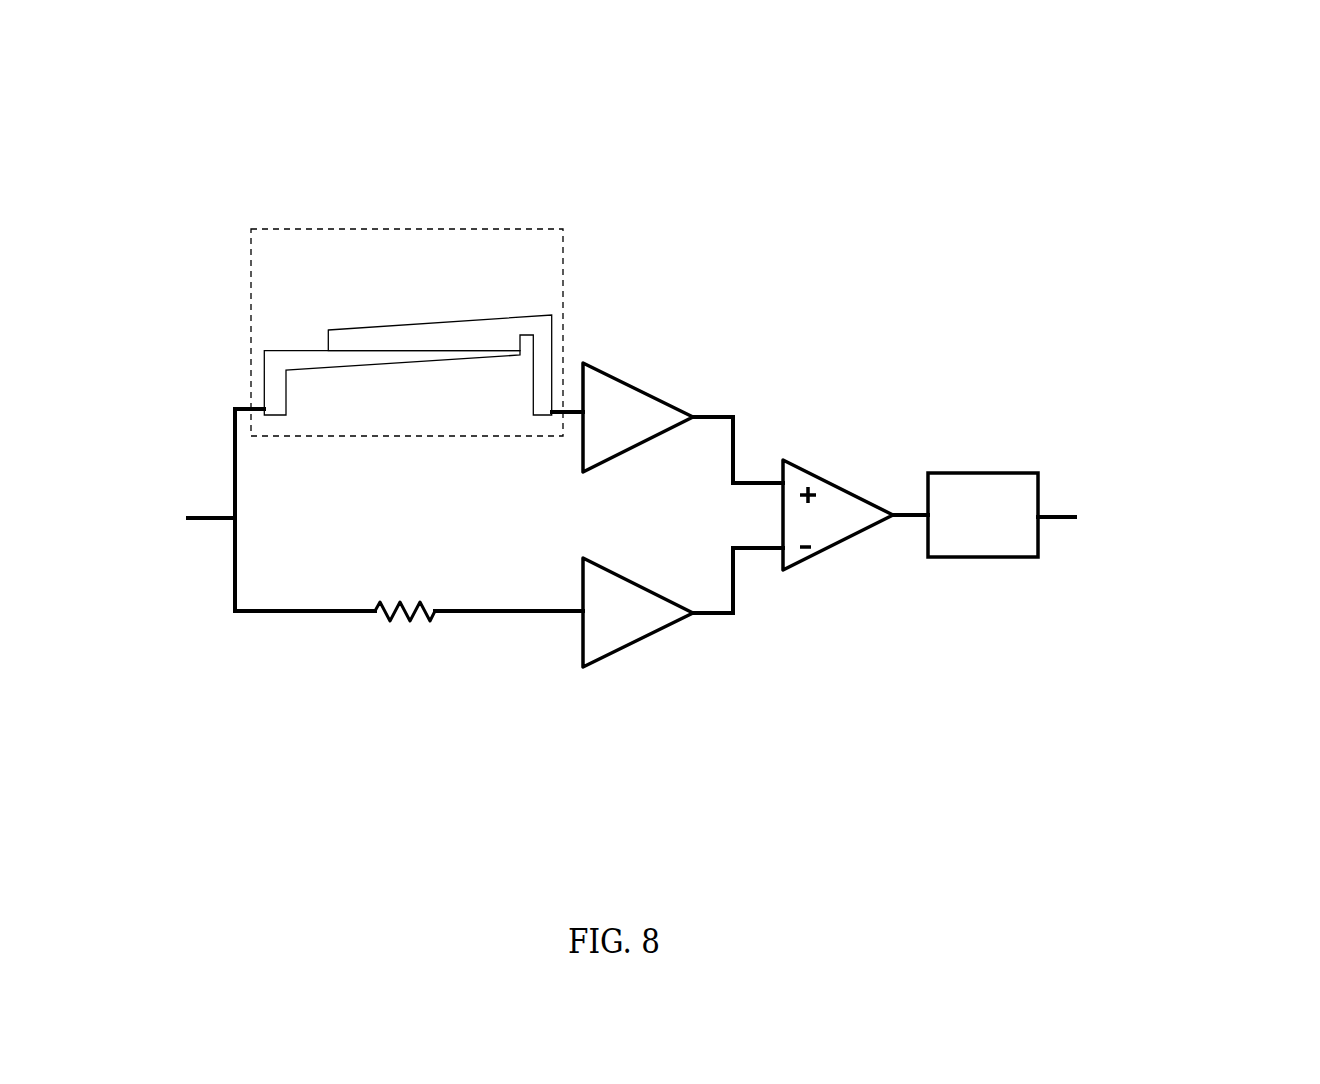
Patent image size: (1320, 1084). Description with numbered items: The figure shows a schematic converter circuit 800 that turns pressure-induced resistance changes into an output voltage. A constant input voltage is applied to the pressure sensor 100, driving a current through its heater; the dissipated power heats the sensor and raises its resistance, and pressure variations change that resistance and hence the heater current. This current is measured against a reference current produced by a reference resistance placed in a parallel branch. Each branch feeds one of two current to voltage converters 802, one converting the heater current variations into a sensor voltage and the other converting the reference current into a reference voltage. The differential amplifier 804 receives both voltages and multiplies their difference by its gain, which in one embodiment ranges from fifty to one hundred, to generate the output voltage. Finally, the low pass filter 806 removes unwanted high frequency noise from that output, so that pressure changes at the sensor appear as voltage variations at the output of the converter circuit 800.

The pressure sensor 100 is at (410, 229).
The converter circuit 800 is at (1207, 160).
The current to voltage converter 802 is at (637, 388).
The differential amplifier 804 is at (830, 483).
The low pass filter 806 is at (987, 557).